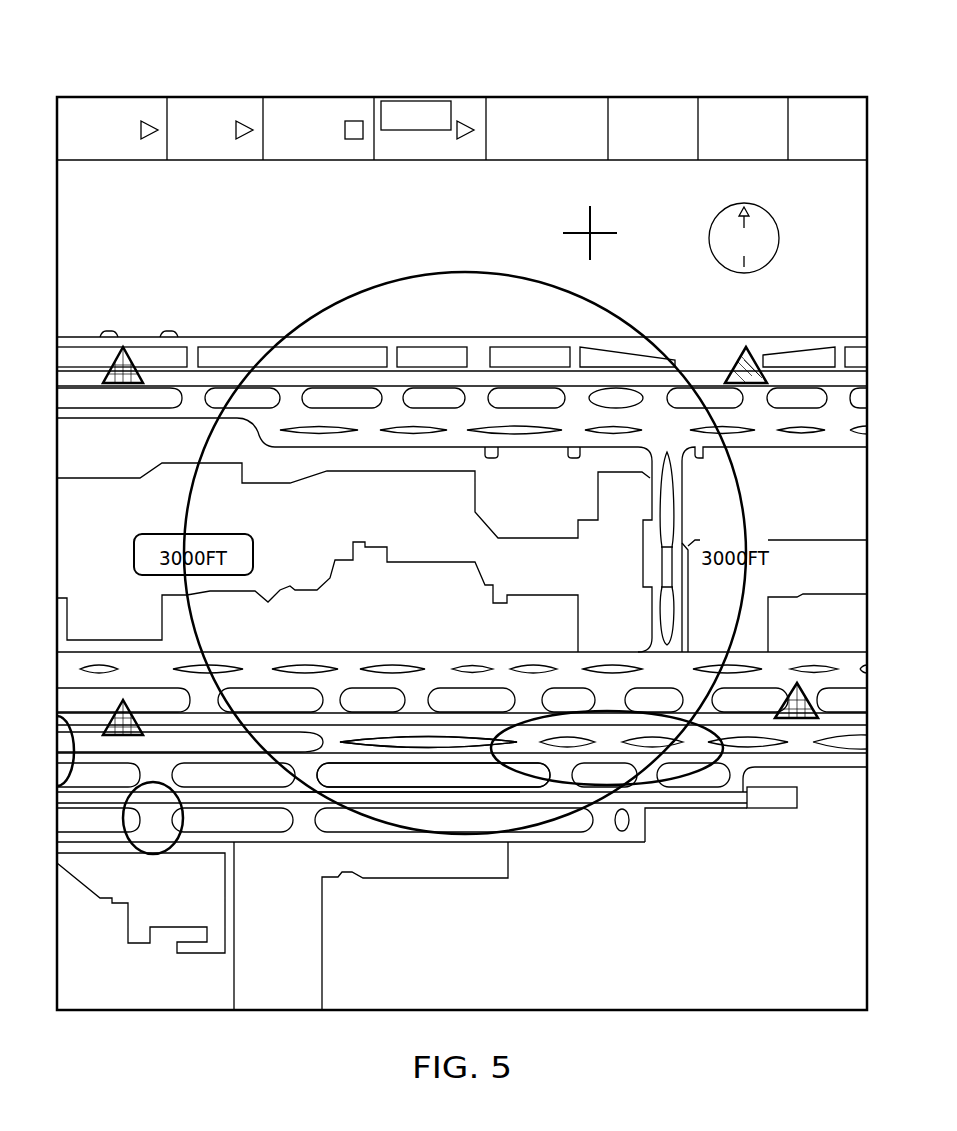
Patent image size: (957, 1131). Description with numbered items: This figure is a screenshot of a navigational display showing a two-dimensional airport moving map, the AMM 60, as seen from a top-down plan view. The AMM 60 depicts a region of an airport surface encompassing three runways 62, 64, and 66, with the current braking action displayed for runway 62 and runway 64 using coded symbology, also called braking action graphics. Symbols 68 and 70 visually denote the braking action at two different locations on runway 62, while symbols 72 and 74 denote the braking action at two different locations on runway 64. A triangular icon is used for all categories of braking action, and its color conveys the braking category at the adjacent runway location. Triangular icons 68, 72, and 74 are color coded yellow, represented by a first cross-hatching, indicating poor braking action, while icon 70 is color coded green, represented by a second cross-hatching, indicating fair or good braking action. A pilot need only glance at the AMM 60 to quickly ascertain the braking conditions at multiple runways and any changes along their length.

The 2D AMM 60 is at (462, 509).
The runway 62 is at (485, 383).
The runway 64 is at (442, 718).
The runway 66 is at (370, 797).
The triangular icon 68 is at (128, 350).
The icon 70 is at (742, 352).
The triangular icon 72 is at (138, 700).
The triangular icon 74 is at (797, 682).